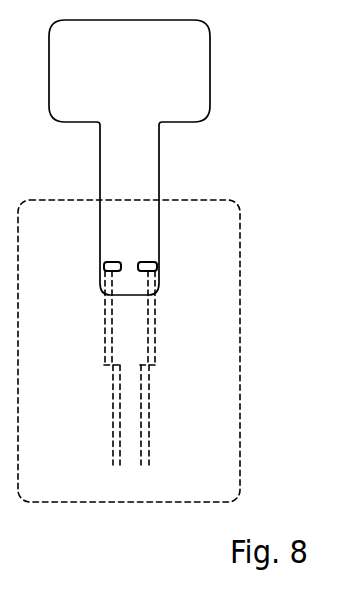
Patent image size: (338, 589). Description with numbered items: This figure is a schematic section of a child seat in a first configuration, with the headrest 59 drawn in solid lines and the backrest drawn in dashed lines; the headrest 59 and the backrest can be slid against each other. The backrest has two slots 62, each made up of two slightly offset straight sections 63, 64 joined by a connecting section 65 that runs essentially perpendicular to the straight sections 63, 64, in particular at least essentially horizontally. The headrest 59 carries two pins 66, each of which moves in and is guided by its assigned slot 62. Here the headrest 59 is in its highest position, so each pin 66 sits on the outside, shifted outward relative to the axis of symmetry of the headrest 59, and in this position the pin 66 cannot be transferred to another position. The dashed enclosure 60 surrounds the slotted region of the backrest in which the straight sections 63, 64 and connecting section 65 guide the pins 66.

The headrest 59 is at (180, 80).
The housing (dashed enclosure) 60 is at (157, 487).
The slot 62 is at (113, 400).
The straight section 63 is at (148, 442).
The straight section 64 is at (153, 315).
The connecting section 65 is at (150, 365).
The pin 66 is at (106, 263).